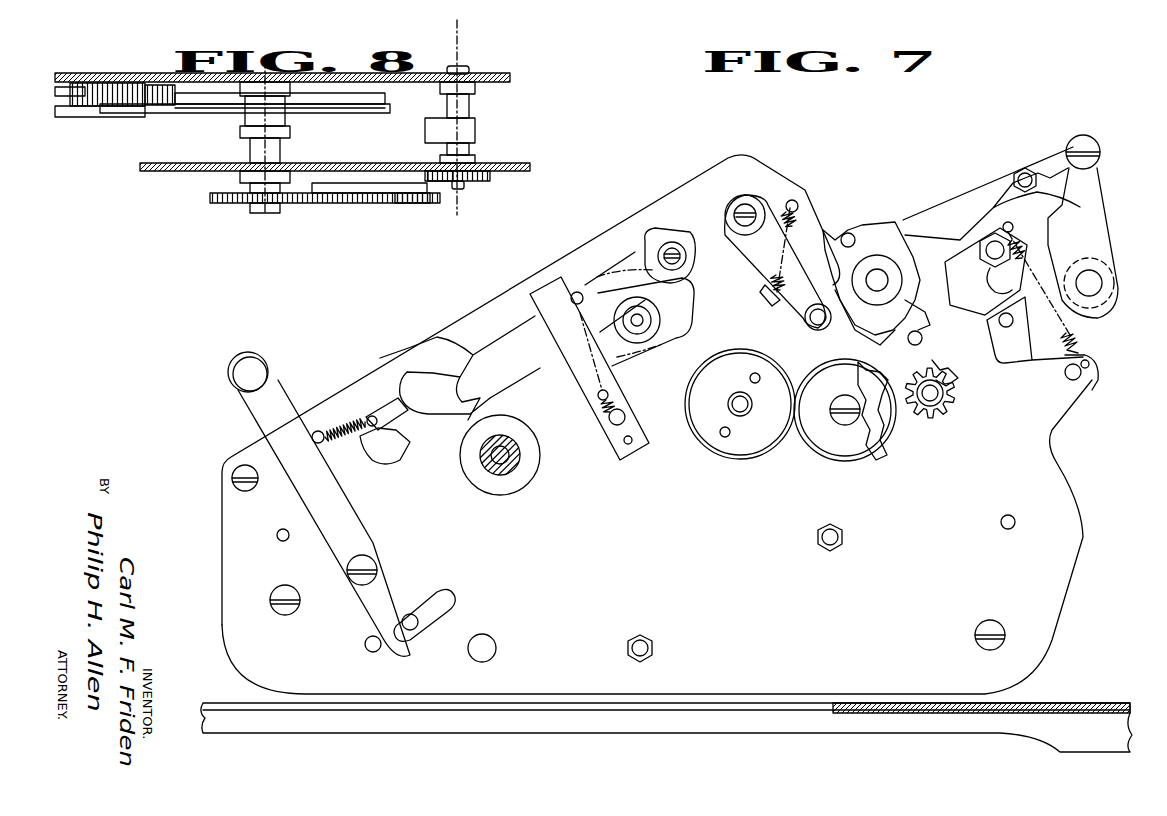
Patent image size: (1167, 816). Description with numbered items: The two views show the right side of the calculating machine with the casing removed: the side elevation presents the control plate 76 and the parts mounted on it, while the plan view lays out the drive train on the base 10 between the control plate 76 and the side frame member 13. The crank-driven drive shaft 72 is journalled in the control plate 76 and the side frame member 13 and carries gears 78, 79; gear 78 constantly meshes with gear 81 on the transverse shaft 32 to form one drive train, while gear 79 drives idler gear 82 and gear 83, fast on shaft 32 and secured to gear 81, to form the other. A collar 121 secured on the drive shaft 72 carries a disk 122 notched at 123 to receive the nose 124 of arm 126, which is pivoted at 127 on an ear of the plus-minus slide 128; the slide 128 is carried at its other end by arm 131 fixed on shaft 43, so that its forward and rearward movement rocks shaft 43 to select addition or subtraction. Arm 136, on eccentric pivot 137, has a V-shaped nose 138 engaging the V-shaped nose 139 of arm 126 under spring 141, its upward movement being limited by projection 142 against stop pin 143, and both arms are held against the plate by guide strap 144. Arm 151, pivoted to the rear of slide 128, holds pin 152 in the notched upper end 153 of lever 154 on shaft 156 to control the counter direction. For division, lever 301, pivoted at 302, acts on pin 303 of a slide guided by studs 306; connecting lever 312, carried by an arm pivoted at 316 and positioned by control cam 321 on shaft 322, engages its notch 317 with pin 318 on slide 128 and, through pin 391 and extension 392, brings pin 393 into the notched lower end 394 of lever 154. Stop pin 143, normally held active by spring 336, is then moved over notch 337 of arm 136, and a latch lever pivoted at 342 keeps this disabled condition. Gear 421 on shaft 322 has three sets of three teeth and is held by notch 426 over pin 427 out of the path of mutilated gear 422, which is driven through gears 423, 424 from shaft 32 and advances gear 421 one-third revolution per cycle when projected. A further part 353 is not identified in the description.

In FIG. 7, the base 10 is at (856, 704).
In FIG. 8, the side frame member 13 is at (489, 82).
In FIG. 8, the transverse shaft 32 is at (268, 202).
In FIG. 7, the transverse shaft 32 is at (733, 400).
In FIG. 7, the shaft 43 is at (1100, 283).
In FIG. 7, the drive shaft 72 is at (510, 456).
In FIG. 8, the control plate 76 is at (162, 171).
In FIG. 7, the control plate 76 is at (1078, 536).
In FIG. 8, the gear 78 is at (78, 118).
In FIG. 8, the gear 79 is at (60, 92).
In FIG. 8, the gear 81 is at (178, 114).
In FIG. 8, the idler gear 82 is at (118, 86).
In FIG. 8, the gear 83 is at (220, 104).
In FIG. 7, the collar 121 is at (490, 470).
In FIG. 7, the annular flange or disk 122 is at (468, 462).
In FIG. 7, the notch 123 is at (470, 440).
In FIG. 7, the projection or nose 124 is at (478, 418).
In FIG. 7, the arm 126 is at (532, 380).
In FIG. 7, the pivot 127 is at (684, 285).
In FIG. 7, the plus-minus slide 128 is at (690, 312).
In FIG. 7, the arm 131 is at (1080, 225).
In FIG. 7, the arm 136 is at (483, 340).
In FIG. 7, the eccentric pivot 137 is at (673, 242).
In FIG. 7, the V-shaped nose 138 is at (457, 372).
In FIG. 7, the V-shaped nose 139 is at (460, 384).
In FIG. 7, the spring 141 is at (615, 402).
In FIG. 7, the projection 142 is at (368, 455).
In FIG. 7, the stop pin 143 is at (373, 412).
In FIG. 7, the guide strap 144 is at (580, 400).
In FIG. 7, the arm 151 is at (975, 205).
In FIG. 7, the pin 152 is at (847, 233).
In FIG. 7, the notched upper end 153 is at (866, 240).
In FIG. 7, the lever 154 is at (865, 328).
In FIG. 7, the shaft 156 is at (882, 275).
In FIG. 7, the division control lever 301 is at (293, 484).
In FIG. 7, the pivot 302 is at (368, 562).
In FIG. 7, the pin 303 is at (418, 620).
In FIG. 7, the studs 306 is at (365, 645).
In FIG. 7, the connecting lever 312 is at (1020, 362).
In FIG. 7, the pivot 316 is at (1009, 515).
In FIG. 7, the notch 317 is at (1005, 280).
In FIG. 7, the pin 318 is at (986, 250).
In FIG. 8, the control cam 321 is at (474, 128).
In FIG. 8, the shaft 322 is at (470, 70).
In FIG. 7, the shaft 322 is at (945, 398).
In FIG. 7, the spring 336 is at (338, 420).
In FIG. 7, the notch 337 is at (397, 452).
In FIG. 7, the pivot 342 is at (242, 470).
In FIG. 7, the pivot 353 is at (1082, 374).
In FIG. 7, the pin 391 is at (1056, 339).
In FIG. 7, the extension 392 is at (1008, 326).
In FIG. 7, the pin 393 is at (920, 334).
In FIG. 7, the notched lower end 394 is at (932, 311).
In FIG. 8, the gear 421 is at (445, 182).
In FIG. 7, the gear 421 is at (925, 415).
In FIG. 8, the mutilated gear 422 is at (334, 196).
In FIG. 7, the mutilated gear 422 is at (885, 450).
In FIG. 8, the gear 423 is at (412, 200).
In FIG. 7, the gear 423 is at (808, 448).
In FIG. 8, the gear 424 is at (218, 200).
In FIG. 7, the gear 424 is at (720, 455).
In FIG. 8, the notch 426 is at (478, 178).
In FIG. 7, the notch 426 is at (952, 378).
In FIG. 8, the pin 427 is at (464, 186).
In FIG. 7, the pin 427 is at (946, 368).